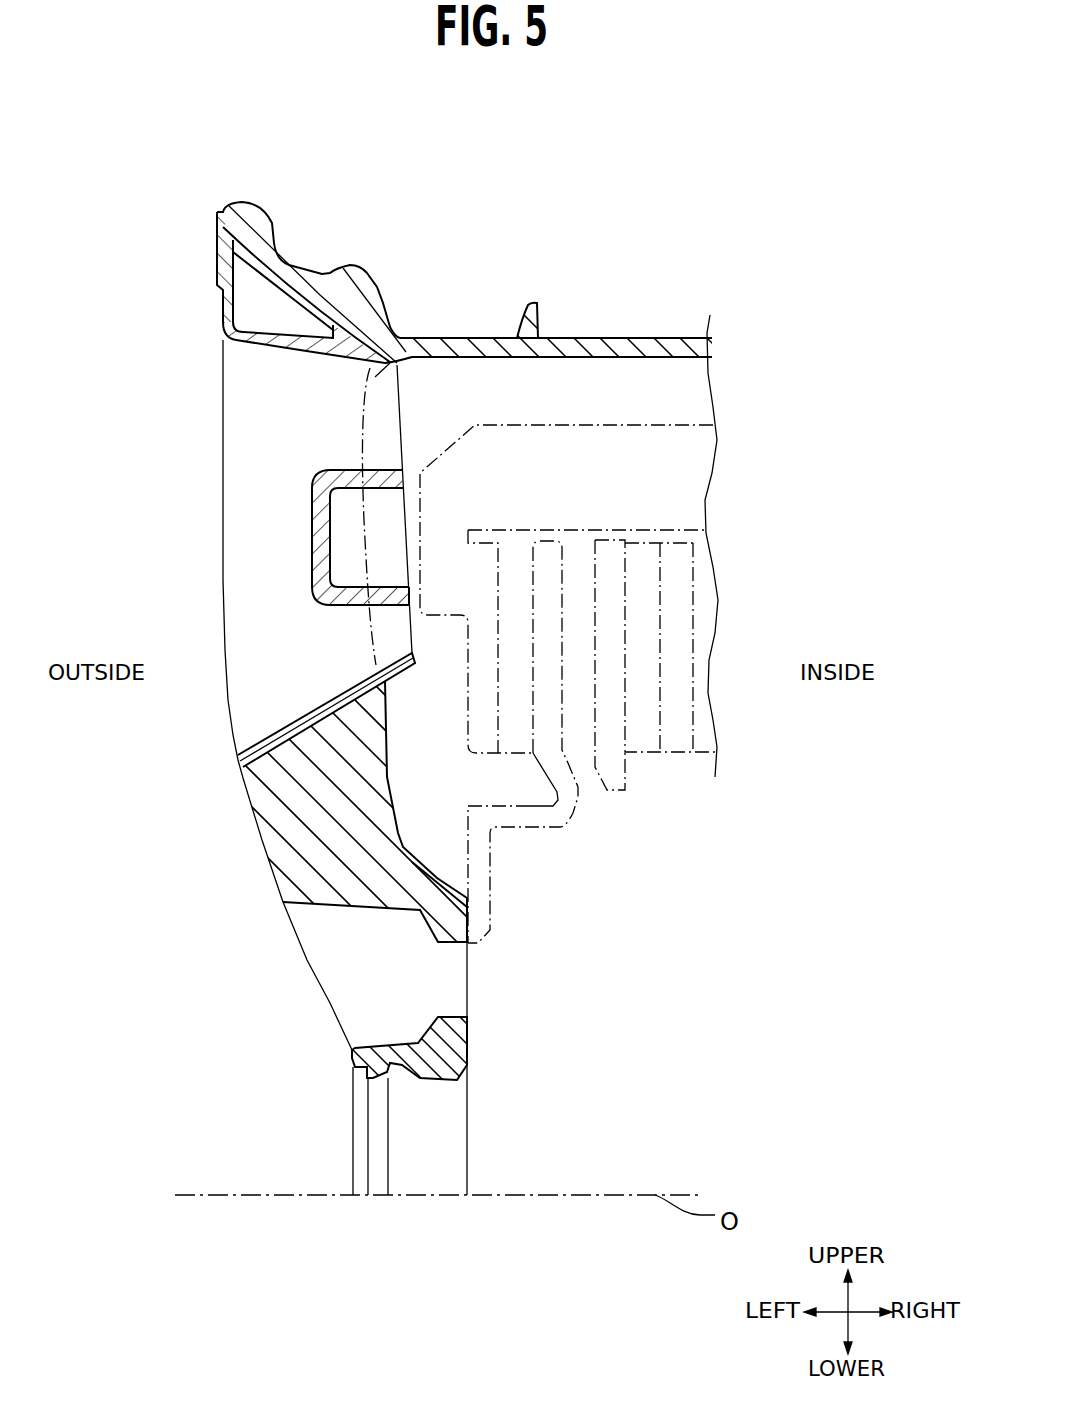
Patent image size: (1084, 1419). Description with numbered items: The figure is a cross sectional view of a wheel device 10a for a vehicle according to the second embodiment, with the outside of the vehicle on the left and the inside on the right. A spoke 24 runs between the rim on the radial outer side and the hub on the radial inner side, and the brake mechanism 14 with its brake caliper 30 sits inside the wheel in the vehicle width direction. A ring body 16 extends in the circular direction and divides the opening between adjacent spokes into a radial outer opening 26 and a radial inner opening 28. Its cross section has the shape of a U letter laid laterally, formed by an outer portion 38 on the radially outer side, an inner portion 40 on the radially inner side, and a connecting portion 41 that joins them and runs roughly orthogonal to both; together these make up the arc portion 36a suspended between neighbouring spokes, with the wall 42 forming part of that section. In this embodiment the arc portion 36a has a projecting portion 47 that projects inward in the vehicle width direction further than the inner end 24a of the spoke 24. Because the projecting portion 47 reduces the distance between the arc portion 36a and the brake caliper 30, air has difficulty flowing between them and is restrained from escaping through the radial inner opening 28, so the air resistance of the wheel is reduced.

The wheel device for a vehicle 10a is at (580, 471).
The brake mechanism 14 is at (735, 388).
The ring body 16 is at (289, 539).
The spoke 24 is at (373, 698).
The inner end of spoke 24a is at (383, 706).
The radial outer opening 26 is at (390, 402).
The radial inner opening 28 is at (397, 632).
The brake caliper 30 is at (667, 795).
The arc portion 36a is at (289, 539).
The outer portion 38 is at (373, 463).
The inner portion 40 is at (387, 606).
The connecting portion 41 is at (312, 533).
The outer wall portion 42 is at (310, 590).
The projecting portion 47 is at (444, 586).